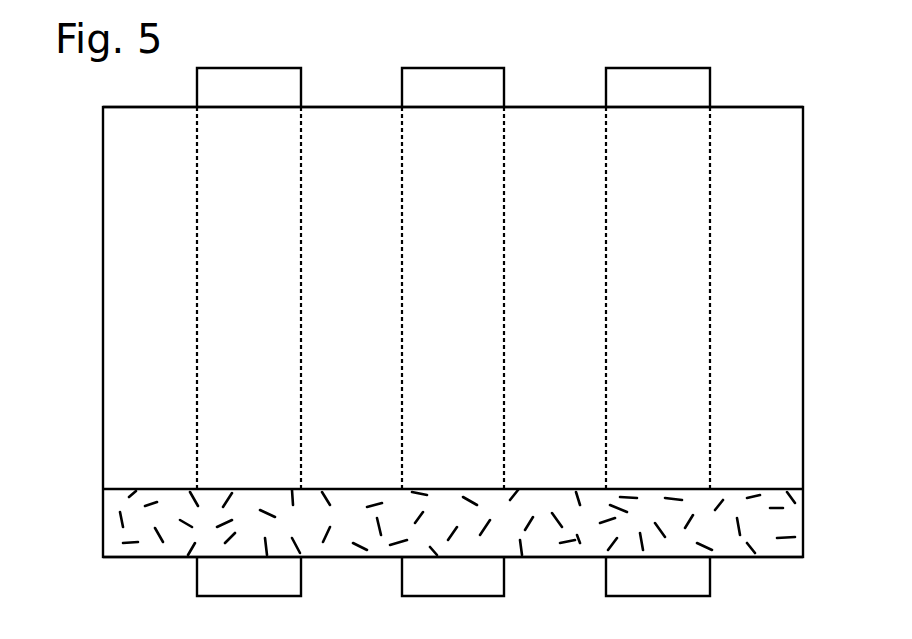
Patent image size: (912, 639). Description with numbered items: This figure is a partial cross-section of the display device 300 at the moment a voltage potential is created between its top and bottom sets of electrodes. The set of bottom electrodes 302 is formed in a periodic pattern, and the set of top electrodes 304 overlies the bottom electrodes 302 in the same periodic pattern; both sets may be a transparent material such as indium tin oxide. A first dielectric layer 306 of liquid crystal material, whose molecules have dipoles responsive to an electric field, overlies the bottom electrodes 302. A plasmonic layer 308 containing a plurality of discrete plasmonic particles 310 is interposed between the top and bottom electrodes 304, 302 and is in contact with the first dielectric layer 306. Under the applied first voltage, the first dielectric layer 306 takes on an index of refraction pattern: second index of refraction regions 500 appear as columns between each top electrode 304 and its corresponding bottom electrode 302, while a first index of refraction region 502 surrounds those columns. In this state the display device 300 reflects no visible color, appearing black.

The display device 300 is at (811, 81).
The set of bottom electrodes 302 is at (632, 597).
The set of top electrodes 304 is at (627, 68).
The first dielectric layer 306 is at (345, 107).
The plasmonic layer 308 is at (373, 558).
The plasmonic particles 310 is at (528, 518).
The second index of refraction regions 500 is at (227, 311).
The first index of refraction region 502 is at (125, 311).